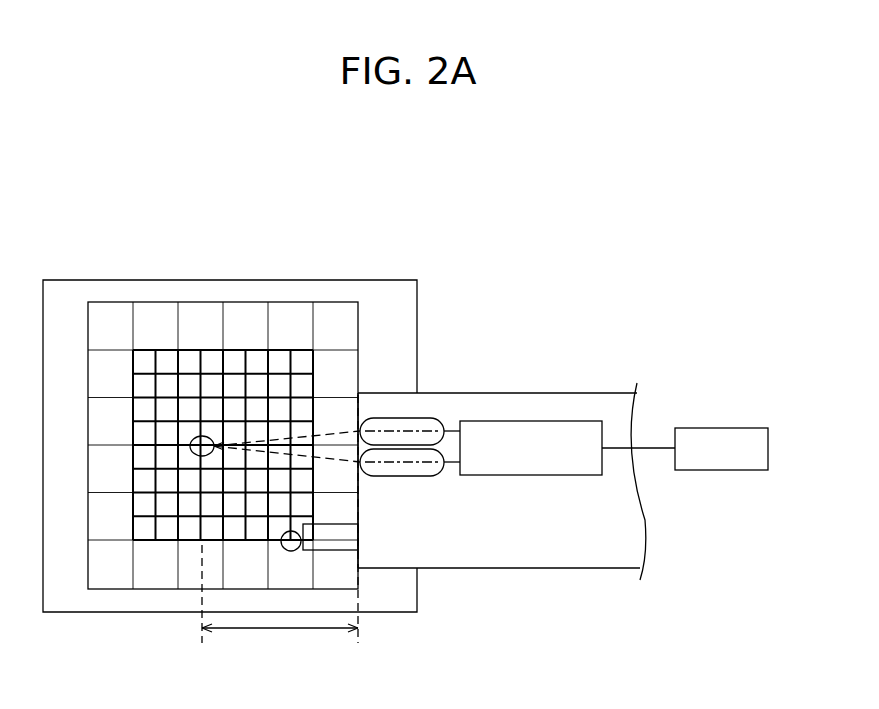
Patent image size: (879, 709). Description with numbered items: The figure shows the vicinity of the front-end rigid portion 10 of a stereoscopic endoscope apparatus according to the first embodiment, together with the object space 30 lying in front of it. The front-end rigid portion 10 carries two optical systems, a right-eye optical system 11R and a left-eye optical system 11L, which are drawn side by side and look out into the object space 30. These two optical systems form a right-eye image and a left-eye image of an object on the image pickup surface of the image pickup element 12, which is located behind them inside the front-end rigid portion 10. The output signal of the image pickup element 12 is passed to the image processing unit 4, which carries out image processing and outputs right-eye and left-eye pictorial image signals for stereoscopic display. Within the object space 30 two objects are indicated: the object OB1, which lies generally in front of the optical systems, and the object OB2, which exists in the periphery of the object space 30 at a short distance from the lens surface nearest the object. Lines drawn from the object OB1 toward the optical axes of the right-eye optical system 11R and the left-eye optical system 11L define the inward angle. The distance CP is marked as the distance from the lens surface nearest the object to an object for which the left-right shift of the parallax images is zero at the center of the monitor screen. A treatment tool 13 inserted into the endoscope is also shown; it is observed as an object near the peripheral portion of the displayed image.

The object space 30 is at (155, 302).
The object OB1 is at (205, 437).
The object OB2 is at (283, 547).
The distance CP is at (280, 528).
The front-end rigid portion 10 is at (540, 393).
The right-eye optical system 11R is at (432, 418).
The left-eye optical system 11L is at (432, 477).
The image pickup element 12 is at (576, 421).
The image processing unit 4 is at (716, 428).
The treatment tool 13 is at (352, 537).